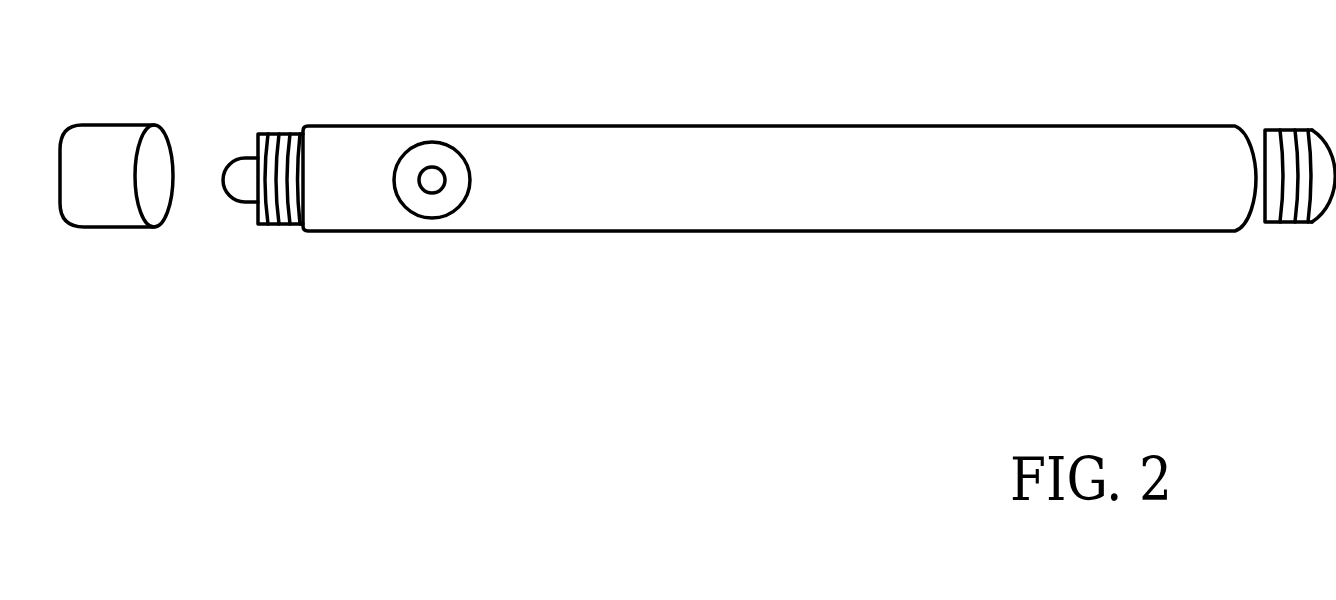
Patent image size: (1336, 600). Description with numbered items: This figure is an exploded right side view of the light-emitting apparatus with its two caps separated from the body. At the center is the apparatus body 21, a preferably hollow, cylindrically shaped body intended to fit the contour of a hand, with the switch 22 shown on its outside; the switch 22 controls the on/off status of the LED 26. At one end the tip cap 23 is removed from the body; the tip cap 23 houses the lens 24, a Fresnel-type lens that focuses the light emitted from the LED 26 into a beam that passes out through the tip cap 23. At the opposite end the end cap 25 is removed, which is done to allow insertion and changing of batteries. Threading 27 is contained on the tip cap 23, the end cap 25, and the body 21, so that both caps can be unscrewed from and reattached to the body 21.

The apparatus body 21 is at (815, 197).
The switch 22 is at (424, 168).
The tip cap 23 is at (92, 152).
The lens 24 is at (158, 224).
The end cap 25 is at (1323, 150).
The LED 26 is at (241, 157).
The threading 27 is at (290, 197).